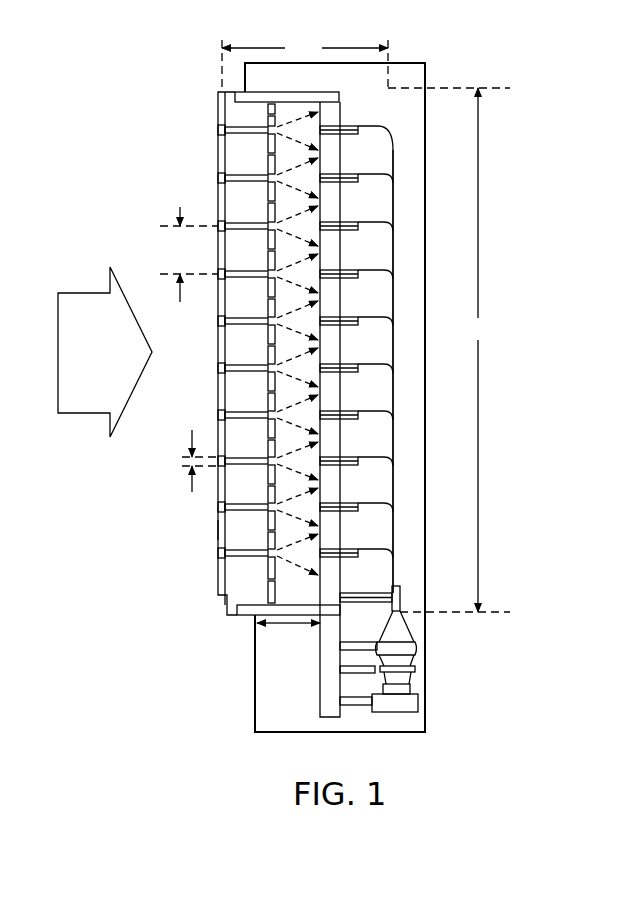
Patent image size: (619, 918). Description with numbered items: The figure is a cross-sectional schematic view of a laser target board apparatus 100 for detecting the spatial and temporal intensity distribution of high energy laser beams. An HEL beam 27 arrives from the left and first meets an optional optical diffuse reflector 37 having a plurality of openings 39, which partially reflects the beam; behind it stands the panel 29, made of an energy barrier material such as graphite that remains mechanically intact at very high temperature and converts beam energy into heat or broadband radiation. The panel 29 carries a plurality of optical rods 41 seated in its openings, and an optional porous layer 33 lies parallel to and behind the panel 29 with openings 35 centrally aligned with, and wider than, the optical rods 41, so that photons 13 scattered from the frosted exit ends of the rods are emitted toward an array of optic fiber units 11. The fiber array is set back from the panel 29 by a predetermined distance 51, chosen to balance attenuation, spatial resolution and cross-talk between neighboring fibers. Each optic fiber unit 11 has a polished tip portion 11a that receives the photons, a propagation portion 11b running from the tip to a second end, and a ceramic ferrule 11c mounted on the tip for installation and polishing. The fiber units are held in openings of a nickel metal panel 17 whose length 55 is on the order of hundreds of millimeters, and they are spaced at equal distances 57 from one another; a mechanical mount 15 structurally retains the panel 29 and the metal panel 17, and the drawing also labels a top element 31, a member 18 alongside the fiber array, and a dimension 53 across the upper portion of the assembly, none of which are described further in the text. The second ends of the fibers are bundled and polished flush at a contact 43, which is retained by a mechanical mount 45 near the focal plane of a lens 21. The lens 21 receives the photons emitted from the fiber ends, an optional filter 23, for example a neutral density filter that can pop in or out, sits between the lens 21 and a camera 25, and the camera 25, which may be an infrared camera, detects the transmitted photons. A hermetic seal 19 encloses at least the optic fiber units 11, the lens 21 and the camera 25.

The laser target board apparatus 100 is at (553, 112).
The optic fiber unit 11 is at (393, 305).
The tip portion 11a is at (280, 286).
The propagation portion 11b is at (400, 158).
The ceramic ferrule 11c is at (340, 130).
The photons 13 is at (300, 517).
The mechanical mount 15 is at (250, 608).
The metal panel 17 is at (393, 368).
The coolant pipe 18 is at (330, 655).
The hermetic seal 19 is at (292, 732).
The lens 21 is at (403, 645).
The filter 23 is at (410, 670).
The camera 25 is at (415, 705).
The HEL beam 27 is at (76, 410).
The panel 29 is at (235, 160).
The top plate 31 is at (284, 97).
The porous layer 33 is at (262, 110).
The openings 35 is at (268, 330).
The optical diffuse reflector 37 is at (222, 527).
The openings 39 is at (185, 463).
The optical rod 41 is at (243, 562).
The contact 43 is at (398, 610).
The mechanical mount 45 is at (355, 597).
The predetermined distance 51 is at (288, 636).
The depth dimension 53 is at (305, 64).
The length 55 is at (449, 350).
The distance 57 is at (189, 254).